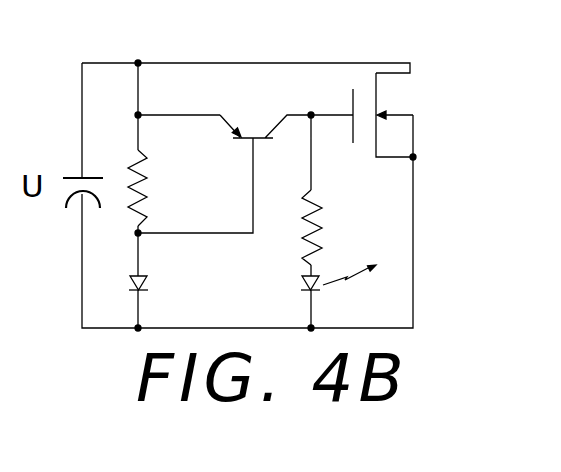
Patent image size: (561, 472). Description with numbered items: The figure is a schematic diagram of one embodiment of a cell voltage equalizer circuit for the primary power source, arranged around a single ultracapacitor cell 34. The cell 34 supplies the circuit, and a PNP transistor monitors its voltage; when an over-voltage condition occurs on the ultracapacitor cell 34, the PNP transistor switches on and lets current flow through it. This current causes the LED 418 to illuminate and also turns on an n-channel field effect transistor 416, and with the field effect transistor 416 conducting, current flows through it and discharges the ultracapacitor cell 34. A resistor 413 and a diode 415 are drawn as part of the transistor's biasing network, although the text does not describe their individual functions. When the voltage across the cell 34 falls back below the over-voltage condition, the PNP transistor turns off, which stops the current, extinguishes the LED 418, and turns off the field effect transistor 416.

The ultracapacitor cell 34 is at (64, 203).
The resistor 413 is at (149, 195).
The diode 415 is at (150, 284).
The n-channel field effect transistor 416 is at (398, 100).
The LED 418 is at (318, 293).